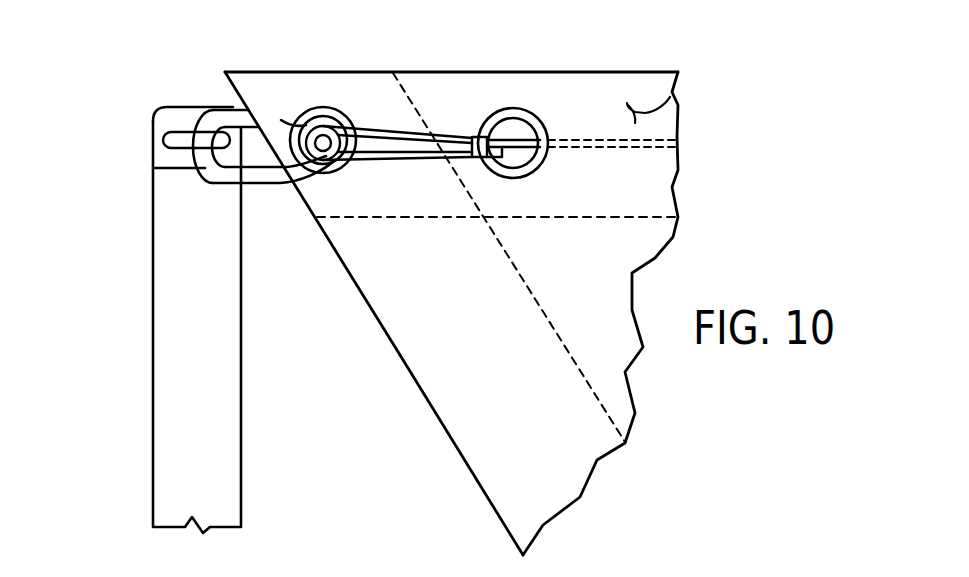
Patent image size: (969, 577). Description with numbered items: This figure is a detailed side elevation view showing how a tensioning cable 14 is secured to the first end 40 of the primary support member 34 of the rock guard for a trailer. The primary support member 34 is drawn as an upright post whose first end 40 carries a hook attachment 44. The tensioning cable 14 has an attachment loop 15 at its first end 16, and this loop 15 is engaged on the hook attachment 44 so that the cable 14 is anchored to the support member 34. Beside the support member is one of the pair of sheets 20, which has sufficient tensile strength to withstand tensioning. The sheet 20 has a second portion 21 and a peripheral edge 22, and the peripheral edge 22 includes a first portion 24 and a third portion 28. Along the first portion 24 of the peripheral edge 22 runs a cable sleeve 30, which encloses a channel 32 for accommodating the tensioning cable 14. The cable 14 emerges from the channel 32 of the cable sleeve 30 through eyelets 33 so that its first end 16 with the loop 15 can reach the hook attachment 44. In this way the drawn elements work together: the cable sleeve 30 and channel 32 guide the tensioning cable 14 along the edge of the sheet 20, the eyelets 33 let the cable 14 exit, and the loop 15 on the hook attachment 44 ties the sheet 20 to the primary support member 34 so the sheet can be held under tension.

The tensioning cable 14 is at (588, 140).
The attachment loop 15 is at (385, 122).
The first end 16 is at (307, 133).
The sheet 20 is at (632, 271).
The second portion 21 is at (592, 318).
The peripheral edge 22 is at (334, 250).
The first portion 24 is at (448, 72).
The third portion 28 is at (399, 355).
The cable sleeve 30 is at (623, 80).
The channel 32 is at (673, 97).
The eyelet 33 is at (323, 107).
The primary support member 34 is at (118, 203).
The first end 40 is at (157, 113).
The hook attachment 44 is at (192, 132).